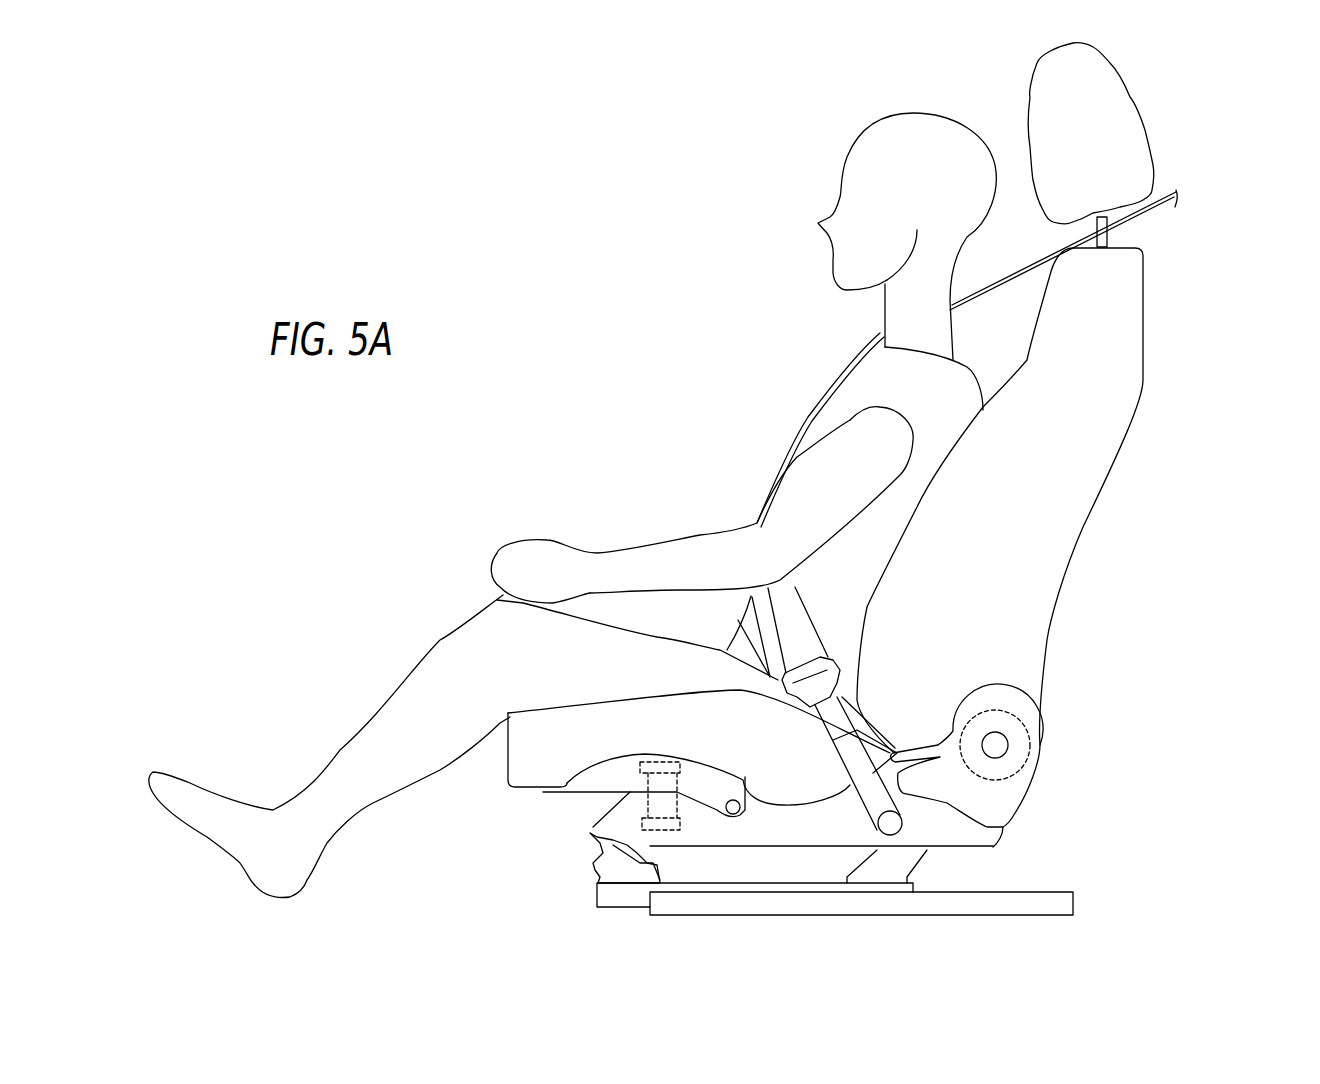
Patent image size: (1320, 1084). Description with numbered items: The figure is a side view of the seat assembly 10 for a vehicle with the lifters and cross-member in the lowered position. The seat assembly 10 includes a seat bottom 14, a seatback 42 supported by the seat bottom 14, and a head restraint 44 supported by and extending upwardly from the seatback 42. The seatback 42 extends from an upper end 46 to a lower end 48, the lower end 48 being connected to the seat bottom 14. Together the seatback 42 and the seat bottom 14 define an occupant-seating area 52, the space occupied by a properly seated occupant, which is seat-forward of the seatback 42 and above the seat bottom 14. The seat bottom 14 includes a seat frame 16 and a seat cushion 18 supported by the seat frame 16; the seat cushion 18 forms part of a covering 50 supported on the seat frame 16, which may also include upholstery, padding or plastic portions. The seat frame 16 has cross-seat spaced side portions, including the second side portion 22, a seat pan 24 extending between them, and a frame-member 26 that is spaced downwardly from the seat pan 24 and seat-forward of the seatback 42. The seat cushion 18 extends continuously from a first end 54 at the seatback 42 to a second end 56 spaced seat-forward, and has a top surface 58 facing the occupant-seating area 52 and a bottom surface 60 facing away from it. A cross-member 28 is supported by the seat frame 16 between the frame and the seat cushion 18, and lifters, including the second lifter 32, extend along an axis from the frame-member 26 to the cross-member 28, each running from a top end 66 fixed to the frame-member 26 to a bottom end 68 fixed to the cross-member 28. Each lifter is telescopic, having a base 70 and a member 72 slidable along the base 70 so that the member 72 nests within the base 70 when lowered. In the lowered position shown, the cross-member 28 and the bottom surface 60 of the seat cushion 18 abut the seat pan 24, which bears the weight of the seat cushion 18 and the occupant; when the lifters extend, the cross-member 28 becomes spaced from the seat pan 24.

The seat assembly 10 is at (1158, 332).
The seat bottom 14 is at (497, 783).
The seat frame 16 is at (587, 845).
The seat cushion 18 is at (547, 740).
The second side portion 22 is at (763, 823).
The seat pan 24 is at (620, 773).
The frame-member 26 is at (660, 830).
The cross-member 28 is at (665, 755).
The second lifter 32 is at (688, 786).
The seatback 42 is at (1047, 543).
The head restraint 44 is at (1128, 100).
The upper end 46 is at (1130, 240).
The lower end 48 is at (897, 750).
The covering 50 is at (570, 750).
The occupant-seating area 52 is at (667, 312).
The first end 54 is at (885, 700).
The second end 56 is at (507, 743).
The top surface 58 is at (673, 687).
The bottom surface 60 is at (540, 790).
The top end 66 is at (647, 790).
The bottom end 68 is at (640, 762).
The base 70 is at (680, 817).
The member 72 is at (683, 768).